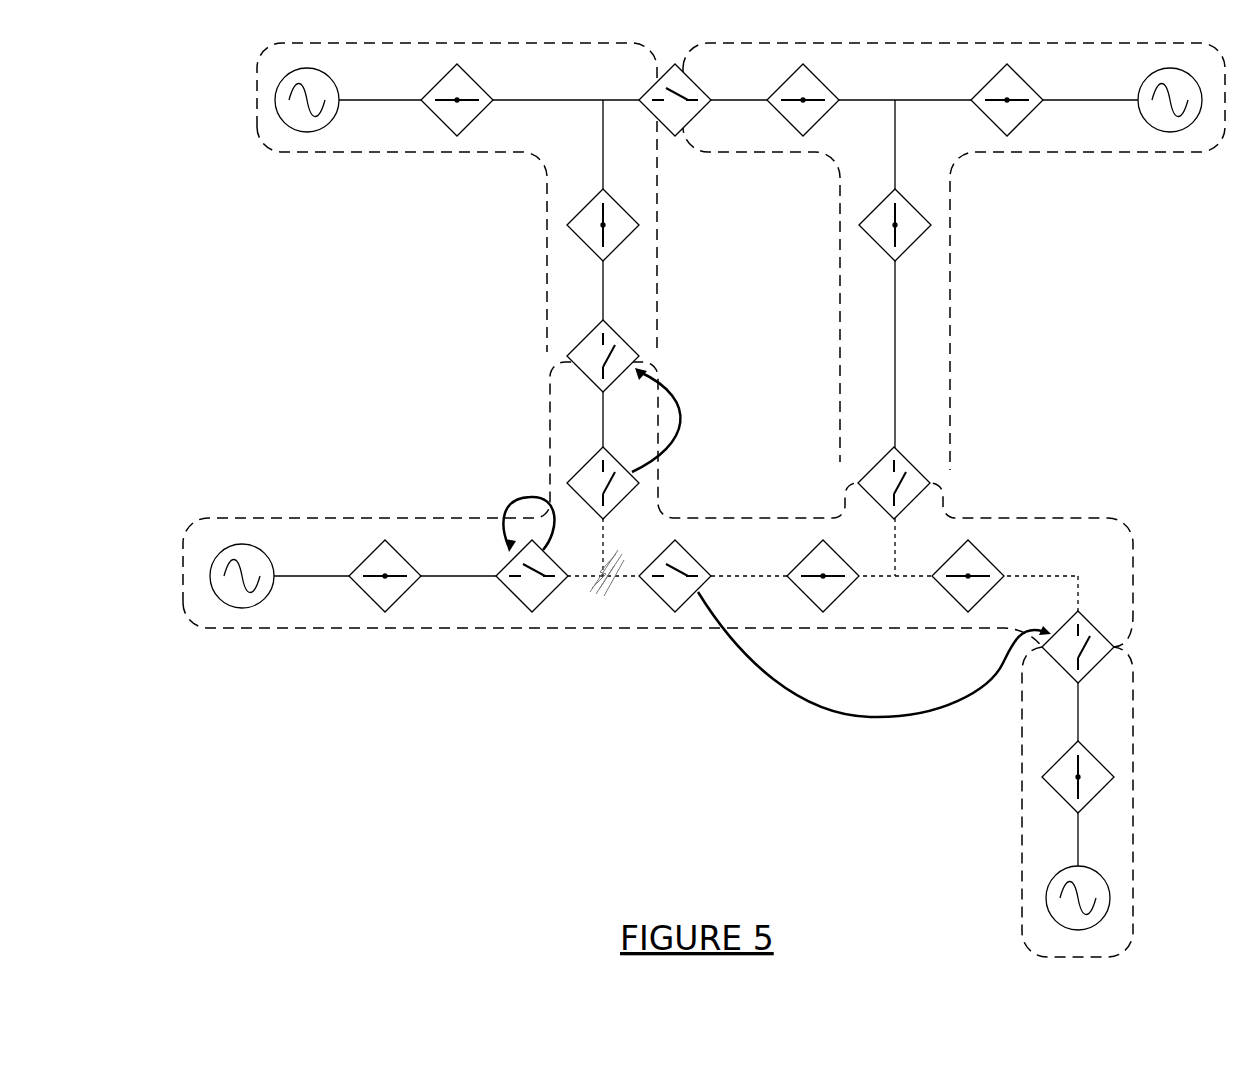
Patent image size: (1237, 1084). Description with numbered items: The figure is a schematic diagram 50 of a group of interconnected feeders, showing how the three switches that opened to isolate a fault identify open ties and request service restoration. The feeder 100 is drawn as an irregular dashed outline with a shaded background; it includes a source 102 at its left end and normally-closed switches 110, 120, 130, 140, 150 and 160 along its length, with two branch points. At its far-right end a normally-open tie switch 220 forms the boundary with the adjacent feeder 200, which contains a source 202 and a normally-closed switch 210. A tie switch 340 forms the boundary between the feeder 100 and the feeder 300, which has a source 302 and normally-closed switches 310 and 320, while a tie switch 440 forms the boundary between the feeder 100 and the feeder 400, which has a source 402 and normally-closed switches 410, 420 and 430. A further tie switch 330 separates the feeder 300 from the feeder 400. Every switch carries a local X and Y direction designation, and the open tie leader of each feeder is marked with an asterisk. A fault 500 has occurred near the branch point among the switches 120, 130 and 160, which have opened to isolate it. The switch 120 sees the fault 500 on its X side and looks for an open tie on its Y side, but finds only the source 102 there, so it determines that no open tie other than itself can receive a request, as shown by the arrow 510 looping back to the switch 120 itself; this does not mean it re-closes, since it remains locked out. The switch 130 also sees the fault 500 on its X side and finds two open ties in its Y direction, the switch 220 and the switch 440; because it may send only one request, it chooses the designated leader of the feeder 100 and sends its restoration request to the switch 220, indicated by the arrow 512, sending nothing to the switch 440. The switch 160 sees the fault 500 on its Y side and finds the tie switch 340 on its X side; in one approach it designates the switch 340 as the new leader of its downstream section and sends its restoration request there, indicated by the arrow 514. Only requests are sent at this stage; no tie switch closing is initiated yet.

The schematic diagram 50 is at (453, 814).
The feeder 100 is at (290, 518).
The source 102 is at (250, 608).
The normally-closed switch 110 is at (398, 606).
The normally-closed switch 120 is at (545, 606).
The normally-closed switch 130 is at (690, 606).
The normally-closed switch 140 is at (834, 606).
The normally-closed switch 150 is at (966, 606).
The normally-closed switch 160 is at (577, 468).
The feeder 200 is at (1022, 810).
The source 202 is at (1107, 874).
The normally-closed switch 210 is at (1105, 788).
The tie switch 220 is at (1117, 657).
The feeder 300 is at (328, 155).
The source 302 is at (280, 120).
The normally-closed switch 310 is at (470, 130).
The normally-closed switch 320 is at (578, 241).
The tie switch 330 is at (695, 132).
The tie switch 340 is at (580, 344).
The feeder 400 is at (1088, 155).
The source 402 is at (1185, 132).
The normally-closed switch 410 is at (818, 132).
The normally-closed switch 420 is at (1022, 132).
The normally-closed switch 430 is at (870, 240).
The tie switch 440 is at (918, 467).
The fault 500 is at (613, 590).
The arrow 510 is at (507, 513).
The arrow 512 is at (863, 727).
The arrow 514 is at (677, 410).